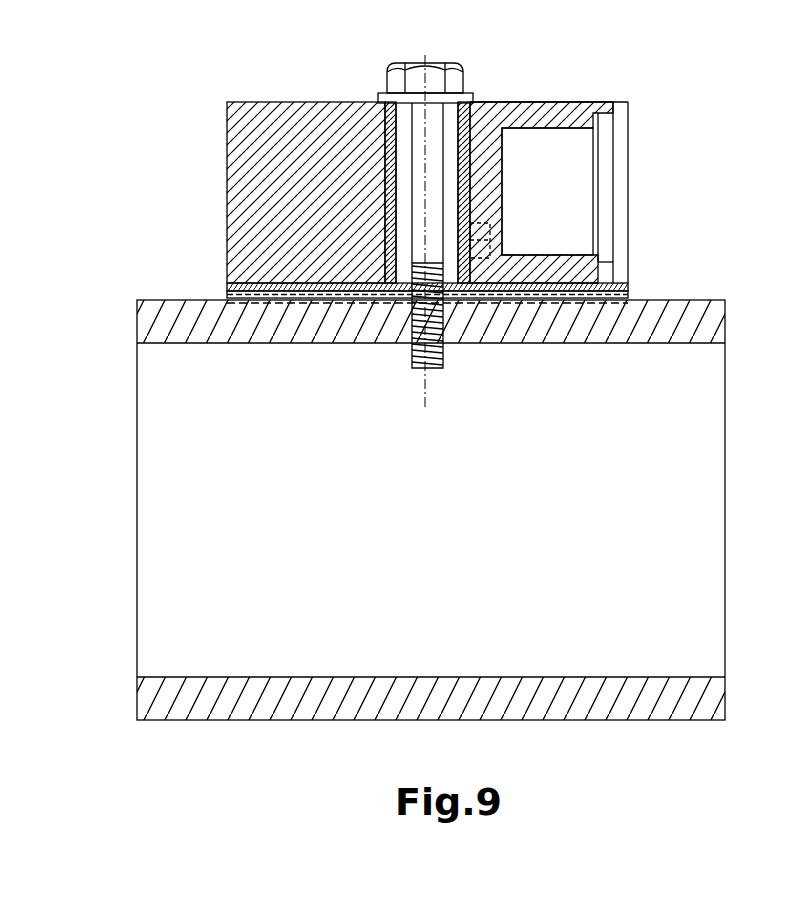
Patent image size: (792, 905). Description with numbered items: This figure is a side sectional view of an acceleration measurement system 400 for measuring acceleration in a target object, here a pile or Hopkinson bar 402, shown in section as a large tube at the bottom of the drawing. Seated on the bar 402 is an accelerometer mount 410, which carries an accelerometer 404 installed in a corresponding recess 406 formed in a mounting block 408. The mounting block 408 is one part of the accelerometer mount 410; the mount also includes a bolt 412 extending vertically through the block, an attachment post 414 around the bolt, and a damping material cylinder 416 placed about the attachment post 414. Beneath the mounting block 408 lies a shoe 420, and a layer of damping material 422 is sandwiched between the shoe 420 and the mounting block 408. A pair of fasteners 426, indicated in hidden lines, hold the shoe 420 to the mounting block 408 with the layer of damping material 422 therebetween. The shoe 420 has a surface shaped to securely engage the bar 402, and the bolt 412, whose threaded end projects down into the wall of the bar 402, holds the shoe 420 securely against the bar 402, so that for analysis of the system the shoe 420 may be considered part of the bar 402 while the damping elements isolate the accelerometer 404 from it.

The acceleration measurement system 400 is at (177, 46).
The Hopkinson bar 402 is at (163, 474).
The accelerometer 404 is at (578, 152).
The recess 406 is at (650, 260).
The mounting block 408 is at (247, 142).
The accelerometer mount 410 is at (290, 27).
The bolt 412 is at (463, 70).
The attachment post 414 is at (403, 113).
The damping material cylinder 416 is at (467, 128).
The shoe 420 is at (227, 298).
The layer of damping material 422 is at (240, 287).
The fasteners 426 is at (506, 232).